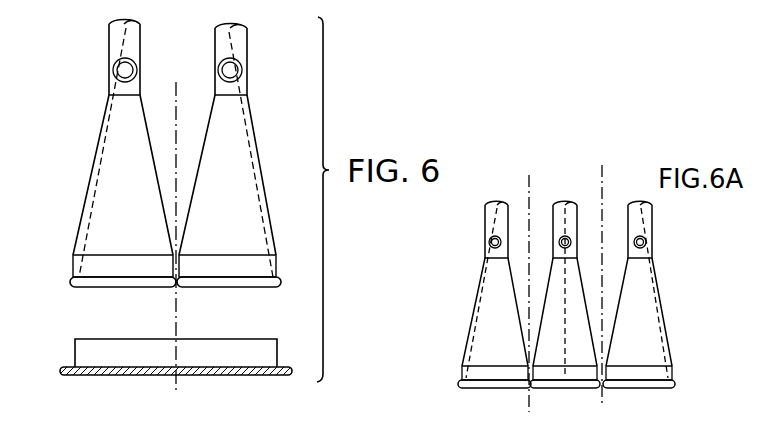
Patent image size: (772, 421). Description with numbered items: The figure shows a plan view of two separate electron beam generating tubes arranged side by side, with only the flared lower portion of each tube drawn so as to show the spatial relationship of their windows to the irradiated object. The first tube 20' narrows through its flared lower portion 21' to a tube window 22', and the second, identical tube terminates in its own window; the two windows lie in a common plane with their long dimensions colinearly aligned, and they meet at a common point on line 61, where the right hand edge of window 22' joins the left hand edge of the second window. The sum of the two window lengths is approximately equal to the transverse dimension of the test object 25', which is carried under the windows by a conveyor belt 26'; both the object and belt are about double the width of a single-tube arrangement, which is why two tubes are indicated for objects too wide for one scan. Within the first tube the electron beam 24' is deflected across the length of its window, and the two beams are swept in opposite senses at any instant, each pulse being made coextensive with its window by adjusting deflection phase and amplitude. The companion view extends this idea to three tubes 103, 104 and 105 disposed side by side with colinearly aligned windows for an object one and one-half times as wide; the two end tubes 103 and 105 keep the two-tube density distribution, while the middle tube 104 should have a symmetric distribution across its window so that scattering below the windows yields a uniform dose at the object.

In FIG. 6, the electron beam generating tube 20' is at (118, 138).
In FIG. 6, the electron beam 24' is at (96, 152).
In FIG. 6, the first base band 21' is at (99, 255).
In FIG. 6, the tube window 22' is at (99, 291).
In FIG. 6, the line 61 is at (176, 95).
In FIG. 6, the test object 25' is at (151, 350).
In FIG. 6, the conveyor belt 26' is at (167, 382).
In FIG. 6A, the electron tube 103 is at (475, 302).
In FIG. 6A, the electron tube 104 is at (548, 300).
In FIG. 6A, the electron tube 105 is at (663, 316).